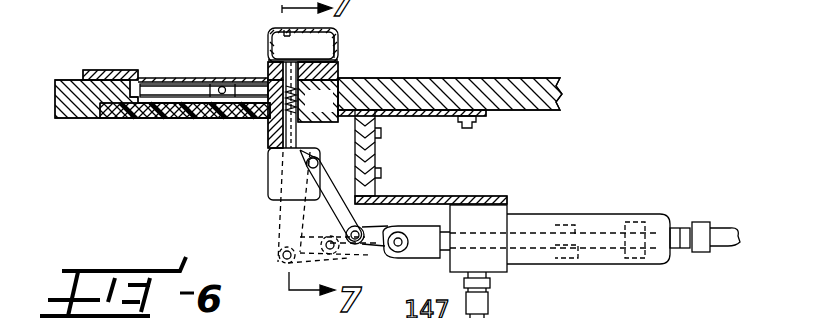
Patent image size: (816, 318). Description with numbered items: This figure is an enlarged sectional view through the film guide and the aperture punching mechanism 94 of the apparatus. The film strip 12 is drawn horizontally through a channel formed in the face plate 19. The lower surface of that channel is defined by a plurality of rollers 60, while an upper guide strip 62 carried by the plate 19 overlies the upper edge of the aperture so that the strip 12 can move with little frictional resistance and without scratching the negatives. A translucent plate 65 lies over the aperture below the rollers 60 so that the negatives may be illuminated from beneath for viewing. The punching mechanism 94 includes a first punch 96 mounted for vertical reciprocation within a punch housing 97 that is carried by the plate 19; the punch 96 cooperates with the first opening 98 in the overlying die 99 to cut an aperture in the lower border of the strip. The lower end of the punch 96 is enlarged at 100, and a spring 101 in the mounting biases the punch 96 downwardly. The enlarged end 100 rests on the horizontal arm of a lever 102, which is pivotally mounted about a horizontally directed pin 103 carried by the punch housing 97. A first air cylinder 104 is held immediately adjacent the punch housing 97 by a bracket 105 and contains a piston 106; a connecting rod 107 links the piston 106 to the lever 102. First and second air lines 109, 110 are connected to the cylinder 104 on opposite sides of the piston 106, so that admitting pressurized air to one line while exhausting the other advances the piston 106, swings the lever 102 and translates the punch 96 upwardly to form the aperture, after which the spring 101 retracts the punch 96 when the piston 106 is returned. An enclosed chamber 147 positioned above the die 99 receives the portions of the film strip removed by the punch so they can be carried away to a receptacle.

The film strip 12 is at (156, 80).
The face plate 19 is at (62, 95).
The rollers 60 is at (172, 97).
The upper guide strip 62 is at (98, 70).
The translucent plate 65 is at (132, 118).
The aperture punching mechanism 94 is at (338, 28).
The first punch 96 is at (272, 74).
The punch housing 97 is at (340, 42).
The first opening 98 is at (272, 52).
The die 99 is at (338, 70).
The enlarged end 100 is at (268, 122).
The spring 101 is at (321, 101).
The lever 102 is at (334, 210).
The pin 103 is at (306, 163).
The first air cylinder 104 is at (590, 214).
The bracket 105 is at (375, 156).
The piston 106 is at (637, 222).
The connecting rod 107 is at (524, 232).
The first air line 109 is at (494, 317).
The second air line 110 is at (727, 232).
The enclosed chamber 147 is at (274, 28).